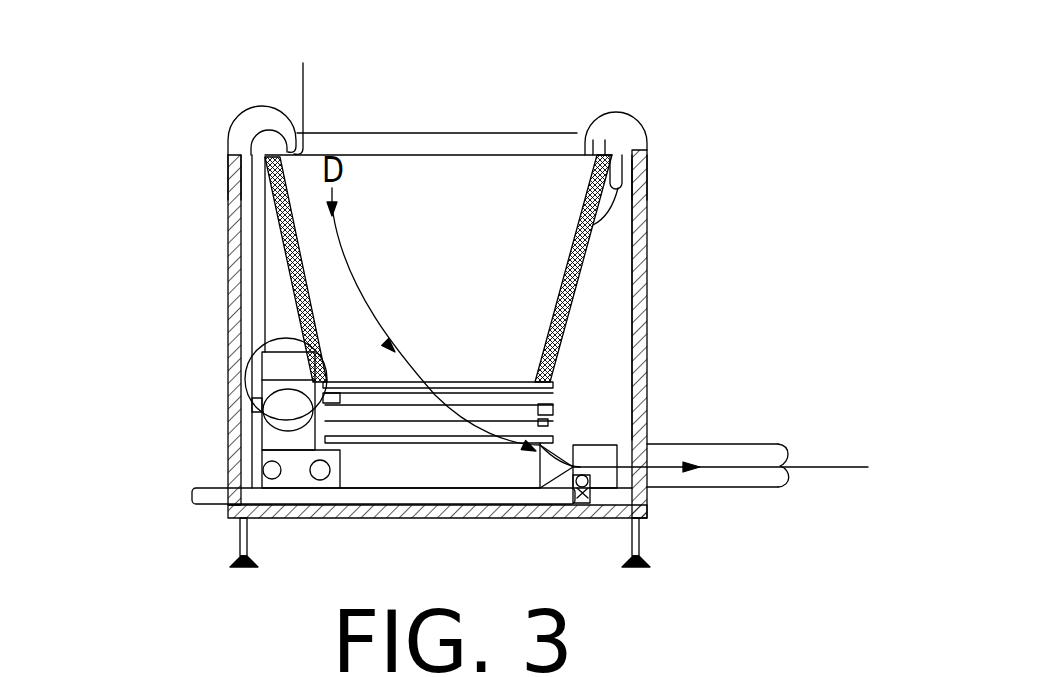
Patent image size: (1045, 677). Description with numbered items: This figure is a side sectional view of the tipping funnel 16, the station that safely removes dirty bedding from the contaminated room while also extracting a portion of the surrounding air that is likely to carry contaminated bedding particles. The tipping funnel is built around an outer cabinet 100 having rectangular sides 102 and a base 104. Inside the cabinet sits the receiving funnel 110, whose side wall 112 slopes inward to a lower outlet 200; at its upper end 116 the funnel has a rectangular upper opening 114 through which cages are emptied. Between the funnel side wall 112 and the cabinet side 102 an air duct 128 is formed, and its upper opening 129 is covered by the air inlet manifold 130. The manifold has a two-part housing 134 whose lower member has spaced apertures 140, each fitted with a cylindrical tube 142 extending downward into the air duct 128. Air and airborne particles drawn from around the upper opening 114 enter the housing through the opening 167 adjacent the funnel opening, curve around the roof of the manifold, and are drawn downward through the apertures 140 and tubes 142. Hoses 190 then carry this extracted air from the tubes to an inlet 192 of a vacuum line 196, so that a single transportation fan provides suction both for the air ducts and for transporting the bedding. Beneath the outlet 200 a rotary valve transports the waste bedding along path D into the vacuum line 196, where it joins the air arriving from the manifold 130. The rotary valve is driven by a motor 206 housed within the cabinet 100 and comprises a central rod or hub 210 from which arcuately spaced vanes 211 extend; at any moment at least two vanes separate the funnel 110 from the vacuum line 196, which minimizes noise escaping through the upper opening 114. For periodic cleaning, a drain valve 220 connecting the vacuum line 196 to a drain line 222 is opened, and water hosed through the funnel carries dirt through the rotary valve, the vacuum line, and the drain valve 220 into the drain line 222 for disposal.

The tipping funnel 16 is at (247, 83).
The outer cabinet 100 is at (650, 286).
The cabinet side 102 is at (650, 344).
The base 104 is at (391, 514).
The receiving funnel 110 is at (566, 300).
The funnel side wall 112 is at (561, 342).
The upper opening 114 is at (440, 168).
The upper end 116 is at (603, 172).
The air duct 128 is at (648, 210).
The upper opening of air duct 129 is at (228, 153).
The air inlet manifold 130 is at (612, 112).
The two-part housing 134 is at (405, 145).
The aperture 140 is at (254, 152).
The cylindrical tube 142 is at (241, 165).
The opening 167 is at (299, 89).
The hose 190 is at (255, 238).
The inlet 192 is at (272, 480).
The vacuum line 196 is at (458, 482).
The lower outlet 200 is at (262, 450).
The motor 206 is at (280, 345).
The central rod or hub 210 is at (429, 410).
The vane 211 is at (530, 398).
The drain valve 220 is at (584, 500).
The drain line 222 is at (529, 495).